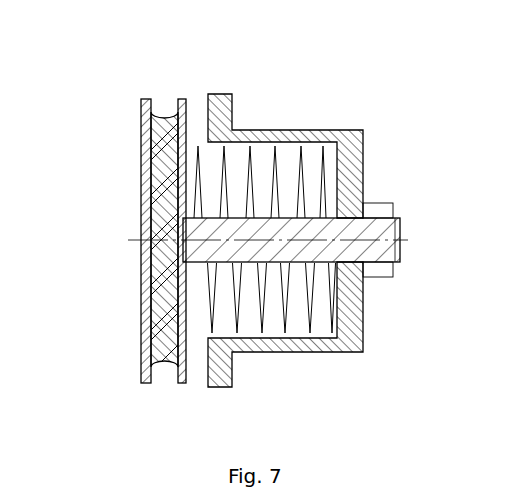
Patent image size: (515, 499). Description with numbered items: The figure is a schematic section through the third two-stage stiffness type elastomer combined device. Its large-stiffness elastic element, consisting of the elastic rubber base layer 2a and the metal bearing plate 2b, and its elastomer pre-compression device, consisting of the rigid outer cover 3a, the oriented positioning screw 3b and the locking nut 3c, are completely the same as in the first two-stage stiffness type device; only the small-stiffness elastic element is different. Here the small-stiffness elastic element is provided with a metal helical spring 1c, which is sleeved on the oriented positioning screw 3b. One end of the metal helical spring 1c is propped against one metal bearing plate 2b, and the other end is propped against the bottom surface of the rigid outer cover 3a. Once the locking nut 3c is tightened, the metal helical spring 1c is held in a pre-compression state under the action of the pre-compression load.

The metal helical spring 1c is at (252, 170).
The elastic rubber base layer 2a is at (143, 370).
The metal bearing plate 2b is at (182, 100).
The rigid outer cover 3a is at (363, 308).
The oriented positioning screw 3b is at (395, 228).
The locking nut 3c is at (382, 267).